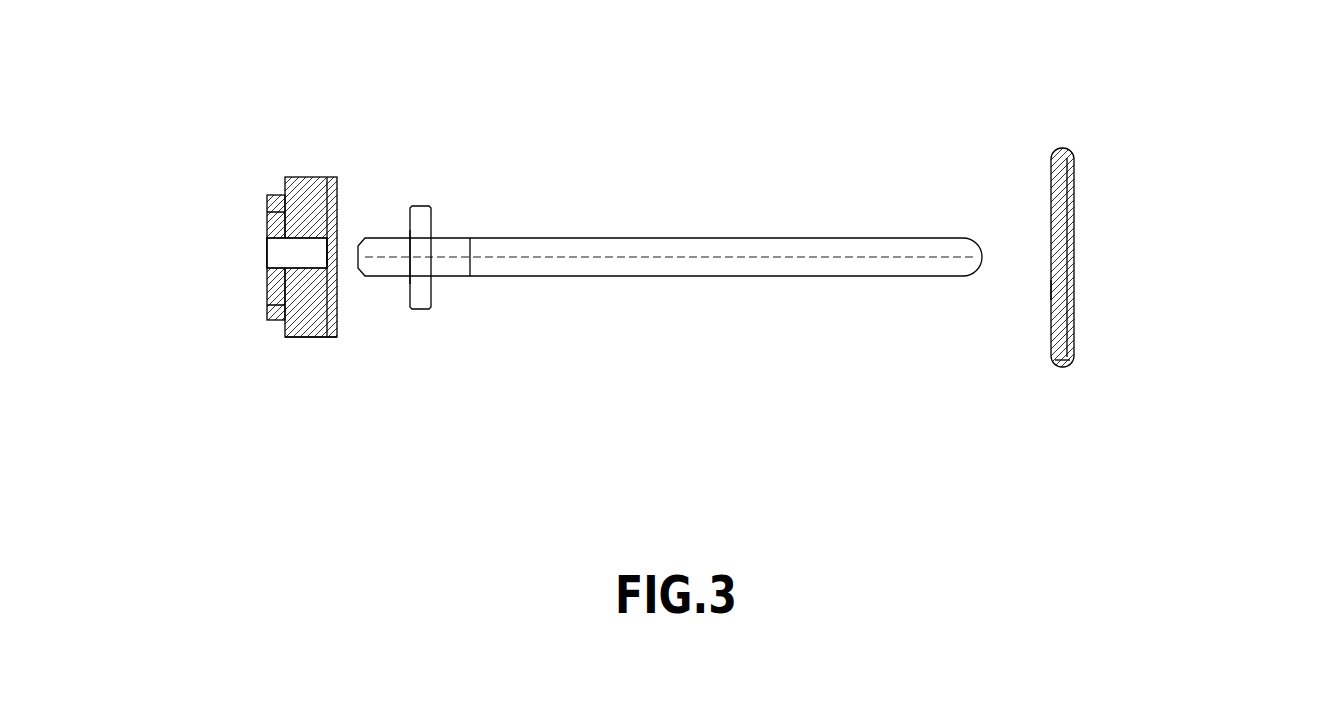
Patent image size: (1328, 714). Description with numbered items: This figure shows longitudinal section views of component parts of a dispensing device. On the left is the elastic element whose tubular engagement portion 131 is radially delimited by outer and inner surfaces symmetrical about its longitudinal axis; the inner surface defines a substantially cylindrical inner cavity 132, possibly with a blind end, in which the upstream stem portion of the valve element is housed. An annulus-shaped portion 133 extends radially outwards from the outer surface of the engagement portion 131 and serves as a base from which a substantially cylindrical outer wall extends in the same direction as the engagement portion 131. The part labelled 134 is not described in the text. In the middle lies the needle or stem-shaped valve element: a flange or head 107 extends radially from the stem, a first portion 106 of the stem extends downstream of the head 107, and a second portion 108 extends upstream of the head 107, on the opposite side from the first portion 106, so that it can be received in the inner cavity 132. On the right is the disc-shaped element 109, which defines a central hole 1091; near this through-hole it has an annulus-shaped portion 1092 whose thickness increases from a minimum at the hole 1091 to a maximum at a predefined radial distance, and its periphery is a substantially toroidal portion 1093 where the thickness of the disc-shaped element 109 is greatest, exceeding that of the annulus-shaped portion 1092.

The first portion of the stem 106 is at (730, 245).
The head 107 is at (425, 217).
The second portion of the stem 108 is at (392, 238).
The disc-shaped element 109 is at (1082, 127).
The central hole 1091 is at (1060, 260).
The annulus-shaped portion 1092 is at (1065, 292).
The toroidal portion 1093 is at (1070, 358).
The engagement portion 131 is at (280, 278).
The inner cavity 132 is at (293, 260).
The annulus-shaped portion 133 is at (326, 293).
The block body 134 is at (307, 338).